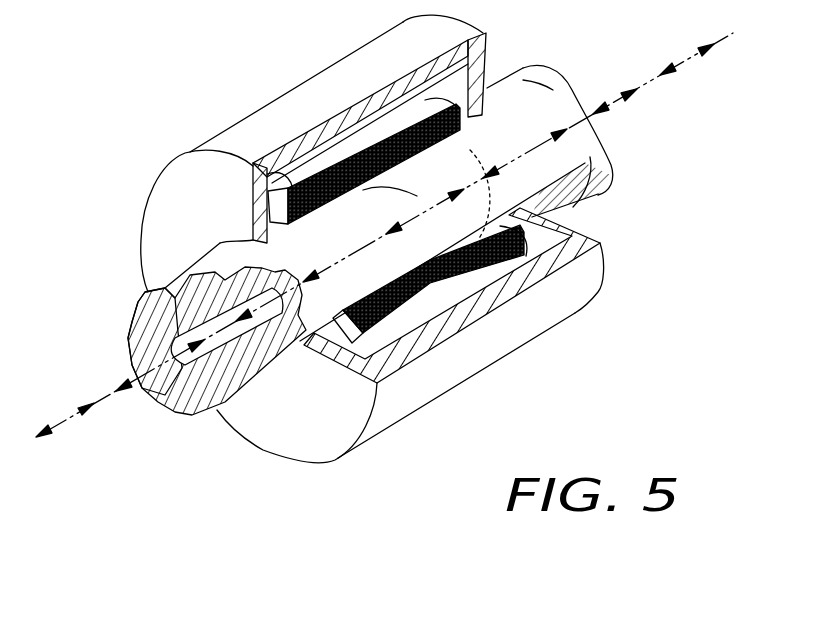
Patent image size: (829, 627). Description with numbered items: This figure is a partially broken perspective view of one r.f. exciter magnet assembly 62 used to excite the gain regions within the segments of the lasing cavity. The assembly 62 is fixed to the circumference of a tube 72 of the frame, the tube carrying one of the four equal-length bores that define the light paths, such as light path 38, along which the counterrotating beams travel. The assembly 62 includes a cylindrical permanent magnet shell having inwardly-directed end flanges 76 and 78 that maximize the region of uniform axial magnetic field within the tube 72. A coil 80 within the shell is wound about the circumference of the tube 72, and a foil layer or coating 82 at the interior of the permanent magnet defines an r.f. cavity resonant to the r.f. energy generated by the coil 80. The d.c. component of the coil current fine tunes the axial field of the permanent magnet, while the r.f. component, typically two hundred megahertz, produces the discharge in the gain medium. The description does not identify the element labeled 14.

The sensor assembly 14 is at (490, 33).
The light path 38 is at (608, 103).
The r.f. exciter magnet assembly 62 is at (228, 110).
The tube 72 is at (183, 407).
The inwardly-directed end flange 76 is at (253, 222).
The inwardly-directed end flange 78 is at (487, 64).
The coil 80 is at (527, 264).
The foil layer or coating 82 is at (257, 199).